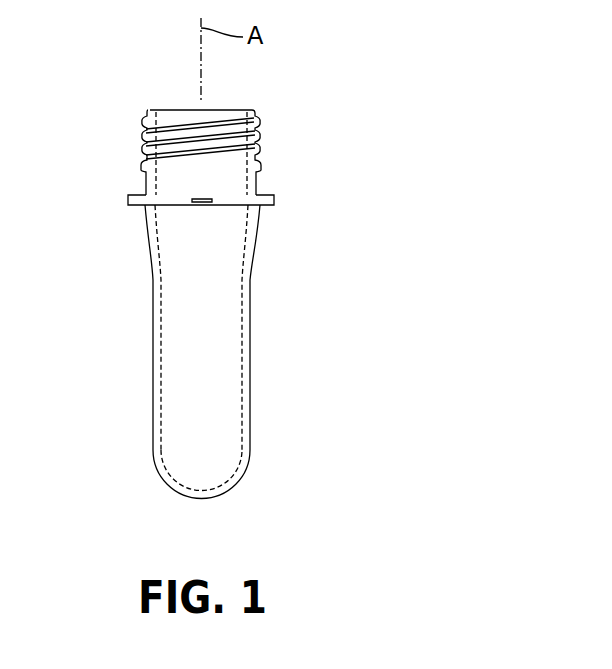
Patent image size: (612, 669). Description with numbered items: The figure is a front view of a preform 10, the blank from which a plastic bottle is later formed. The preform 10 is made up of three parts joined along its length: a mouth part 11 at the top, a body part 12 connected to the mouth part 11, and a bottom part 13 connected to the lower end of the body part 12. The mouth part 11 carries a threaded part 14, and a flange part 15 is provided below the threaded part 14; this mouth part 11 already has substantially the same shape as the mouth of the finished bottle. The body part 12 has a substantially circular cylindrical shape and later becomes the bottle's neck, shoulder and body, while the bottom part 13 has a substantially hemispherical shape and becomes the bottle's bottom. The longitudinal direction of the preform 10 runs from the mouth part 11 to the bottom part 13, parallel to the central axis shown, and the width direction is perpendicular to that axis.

The preform 10 is at (276, 411).
The mouth part 11 is at (261, 157).
The body part 12 is at (252, 338).
The bottom part 13 is at (236, 487).
The threaded part 14 is at (143, 128).
The flange part 15 is at (274, 203).